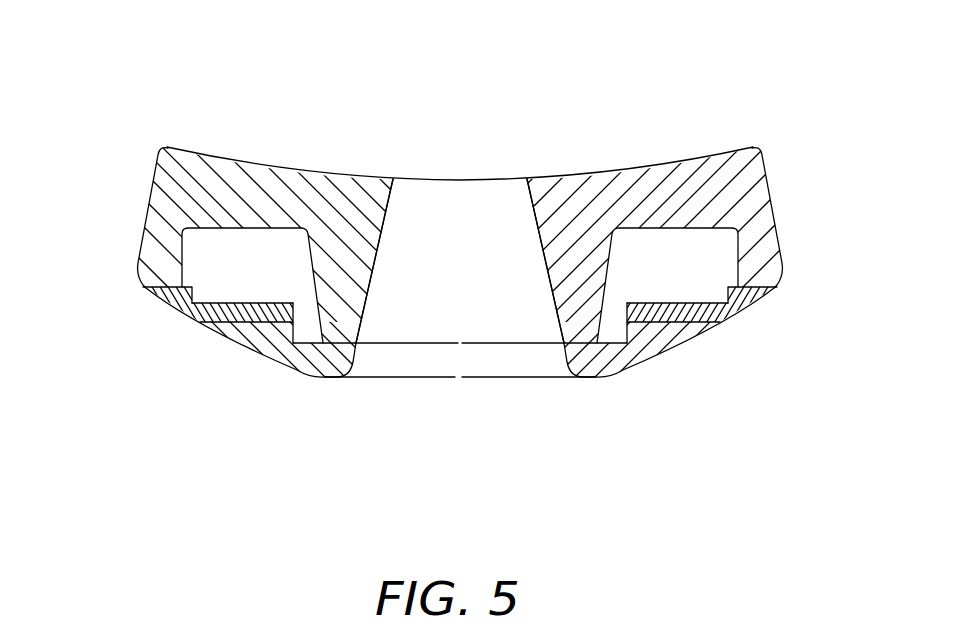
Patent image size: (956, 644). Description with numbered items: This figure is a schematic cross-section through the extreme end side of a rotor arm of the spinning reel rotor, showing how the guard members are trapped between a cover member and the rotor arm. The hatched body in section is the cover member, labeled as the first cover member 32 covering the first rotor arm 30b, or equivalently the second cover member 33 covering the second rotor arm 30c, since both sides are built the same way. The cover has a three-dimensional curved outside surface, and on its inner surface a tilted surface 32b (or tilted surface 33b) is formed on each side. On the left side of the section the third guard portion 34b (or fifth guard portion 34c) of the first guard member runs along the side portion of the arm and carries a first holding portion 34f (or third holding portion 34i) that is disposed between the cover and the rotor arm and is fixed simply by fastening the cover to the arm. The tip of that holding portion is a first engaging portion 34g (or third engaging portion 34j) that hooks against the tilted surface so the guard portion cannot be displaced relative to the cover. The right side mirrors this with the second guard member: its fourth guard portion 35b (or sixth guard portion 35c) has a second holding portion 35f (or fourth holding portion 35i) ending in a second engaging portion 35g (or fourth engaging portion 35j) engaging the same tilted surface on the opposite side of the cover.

The second rotor arm 30c is at (455, 204).
The first rotor arm 30b is at (591, 150).
The tilted surface 32b is at (421, 246).
The tilted surface 33b is at (295, 440).
The first cover member 32 is at (460, 423).
The second cover member 33 is at (603, 381).
The fifth guard portion 34c is at (182, 377).
The third guard portion 34b is at (178, 332).
The first holding portion 34f is at (224, 410).
The third holding portion 34i is at (255, 329).
The first engaging portion 34g is at (366, 425).
The third engaging portion 34j is at (253, 330).
The sixth guard portion 35c is at (720, 379).
The fourth guard portion 35b is at (758, 332).
The second holding portion 35f is at (700, 406).
The fourth holding portion 35i is at (670, 327).
The second engaging portion 35g is at (664, 427).
The fourth engaging portion 35j is at (648, 330).